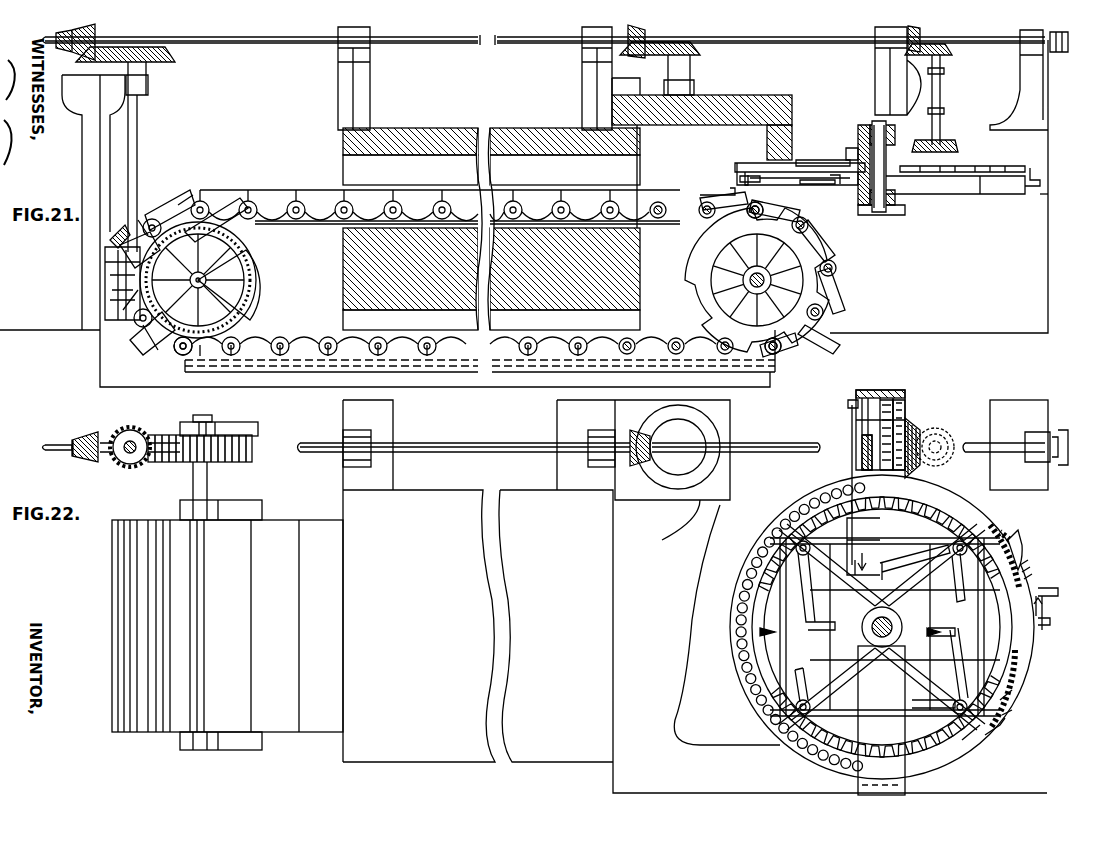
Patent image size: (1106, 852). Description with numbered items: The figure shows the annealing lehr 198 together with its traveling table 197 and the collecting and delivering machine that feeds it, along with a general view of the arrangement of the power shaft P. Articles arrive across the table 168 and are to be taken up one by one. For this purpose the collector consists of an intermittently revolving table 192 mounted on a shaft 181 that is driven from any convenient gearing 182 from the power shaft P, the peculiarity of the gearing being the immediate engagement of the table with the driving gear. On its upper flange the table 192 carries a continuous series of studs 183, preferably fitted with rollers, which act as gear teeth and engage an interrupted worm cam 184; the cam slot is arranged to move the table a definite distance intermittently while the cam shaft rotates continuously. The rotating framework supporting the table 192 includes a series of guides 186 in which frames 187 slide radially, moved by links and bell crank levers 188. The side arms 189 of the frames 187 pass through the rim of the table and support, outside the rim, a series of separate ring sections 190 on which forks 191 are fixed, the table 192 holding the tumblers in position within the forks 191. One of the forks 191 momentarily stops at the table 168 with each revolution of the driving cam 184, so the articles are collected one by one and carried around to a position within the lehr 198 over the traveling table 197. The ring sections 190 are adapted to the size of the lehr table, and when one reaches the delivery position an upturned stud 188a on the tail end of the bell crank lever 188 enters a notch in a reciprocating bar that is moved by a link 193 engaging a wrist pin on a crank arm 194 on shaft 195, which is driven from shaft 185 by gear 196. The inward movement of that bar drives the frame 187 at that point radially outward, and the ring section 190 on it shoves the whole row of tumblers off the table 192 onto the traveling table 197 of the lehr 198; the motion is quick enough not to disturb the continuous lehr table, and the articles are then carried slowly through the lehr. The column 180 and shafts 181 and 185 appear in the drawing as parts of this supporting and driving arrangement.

In FIG. 21, the power shaft P is at (430, 45).
In FIG. 21, the table 168 is at (1046, 198).
In FIG. 22, the table 168 is at (1052, 625).
In FIG. 21, the column 180 is at (960, 196).
In FIG. 22, the column 180 is at (905, 731).
In FIG. 21, the shaft 181 is at (880, 210).
In FIG. 22, the shaft 181 is at (882, 648).
In FIG. 21, the gearing 182 is at (948, 140).
In FIG. 22, the gearing 182 is at (945, 428).
In FIG. 21, the studs 183 is at (735, 165).
In FIG. 22, the studs 183 is at (930, 500).
In FIG. 21, the interrupted worm cam 184 is at (858, 145).
In FIG. 22, the interrupted worm cam 184 is at (900, 415).
In FIG. 22, the shaft 185 is at (918, 430).
In FIG. 22, the guides 186 is at (910, 600).
In FIG. 22, the frames 187 is at (785, 640).
In FIG. 21, the bell crank levers 188 is at (850, 168).
In FIG. 22, the bell crank levers 188 is at (1000, 722).
In FIG. 21, the upturned stud 188a is at (848, 152).
In FIG. 22, the upturned stud 188a is at (970, 742).
In FIG. 21, the side arms 189 is at (790, 190).
In FIG. 22, the side arms 189 is at (1000, 695).
In FIG. 21, the ring sections 190 is at (735, 173).
In FIG. 22, the ring sections 190 is at (1010, 560).
In FIG. 21, the forks 191 is at (1030, 180).
In FIG. 22, the forks 191 is at (1005, 555).
In FIG. 21, the intermittently revolving table 192 is at (852, 145).
In FIG. 22, the intermittently revolving table 192 is at (848, 470).
In FIG. 22, the link 193 is at (850, 420).
In FIG. 22, the crank arm 194 is at (868, 425).
In FIG. 22, the shaft 195 is at (882, 430).
In FIG. 22, the gear 196 is at (905, 430).
In FIG. 21, the traveling table 197 is at (655, 182).
In FIG. 21, the lehr 198 is at (567, 204).